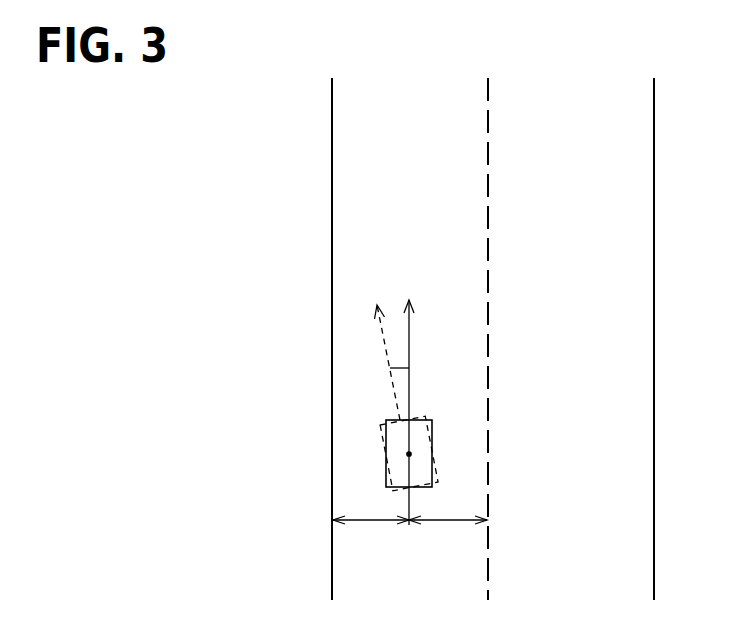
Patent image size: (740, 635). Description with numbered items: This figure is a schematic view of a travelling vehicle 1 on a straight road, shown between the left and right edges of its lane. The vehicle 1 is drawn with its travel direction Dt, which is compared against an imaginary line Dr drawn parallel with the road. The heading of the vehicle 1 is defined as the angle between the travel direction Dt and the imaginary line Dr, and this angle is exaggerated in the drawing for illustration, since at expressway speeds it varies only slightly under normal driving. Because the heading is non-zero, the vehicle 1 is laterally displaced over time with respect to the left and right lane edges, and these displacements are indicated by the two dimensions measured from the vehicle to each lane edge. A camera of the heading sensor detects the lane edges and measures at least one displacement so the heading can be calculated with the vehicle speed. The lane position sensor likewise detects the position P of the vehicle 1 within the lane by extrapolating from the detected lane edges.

The vehicle 1 is at (432, 420).
The position of the vehicle within the lane P is at (411, 454).
The imaginary line parallel with the road Dr is at (412, 399).
The travel direction of the vehicle Dt is at (380, 351).